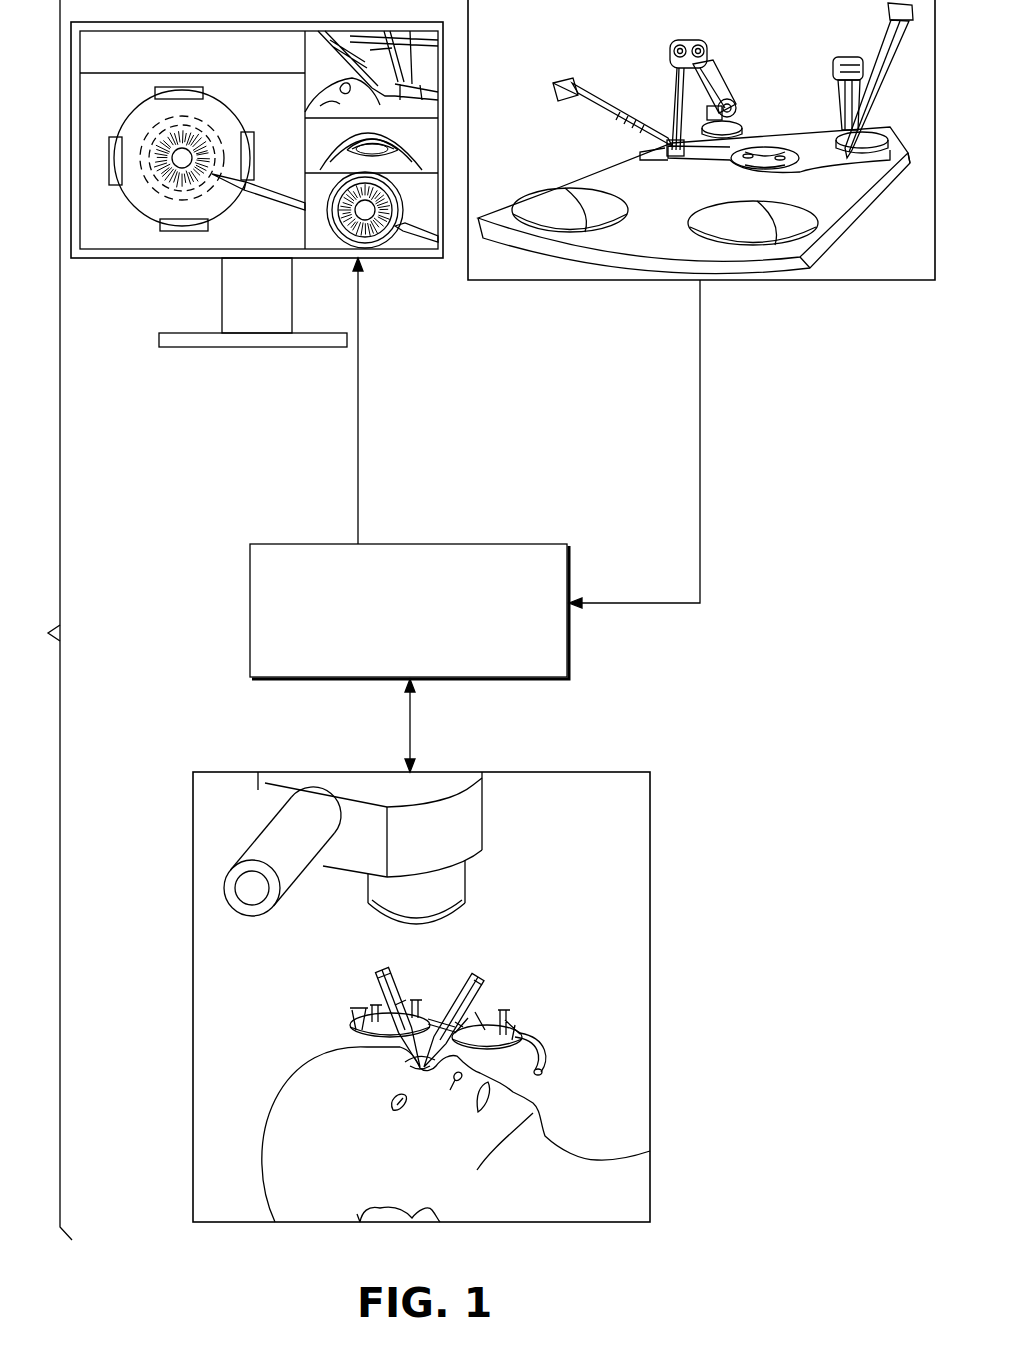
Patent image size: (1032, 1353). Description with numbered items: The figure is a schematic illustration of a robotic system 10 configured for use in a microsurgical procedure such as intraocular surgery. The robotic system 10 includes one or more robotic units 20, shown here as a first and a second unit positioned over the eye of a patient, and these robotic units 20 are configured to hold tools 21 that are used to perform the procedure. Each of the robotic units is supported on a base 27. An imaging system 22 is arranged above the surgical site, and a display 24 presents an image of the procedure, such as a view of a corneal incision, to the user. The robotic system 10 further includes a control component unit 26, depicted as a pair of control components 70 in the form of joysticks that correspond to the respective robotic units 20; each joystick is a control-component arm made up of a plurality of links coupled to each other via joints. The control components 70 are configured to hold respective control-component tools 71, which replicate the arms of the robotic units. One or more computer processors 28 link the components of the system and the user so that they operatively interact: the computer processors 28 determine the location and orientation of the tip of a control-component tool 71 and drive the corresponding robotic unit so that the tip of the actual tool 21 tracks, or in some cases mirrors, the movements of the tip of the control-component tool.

The robotic system 10 is at (44, 620).
The robotic units 20 is at (372, 988).
The tools 21 is at (413, 1050).
The imaging system 22 is at (368, 895).
The display 24 is at (130, 258).
The control component unit 26 is at (590, 298).
The base 27 is at (540, 1065).
The computer processors 28 is at (250, 617).
The control components 70 is at (853, 93).
The control-component tools 71 is at (887, 63).